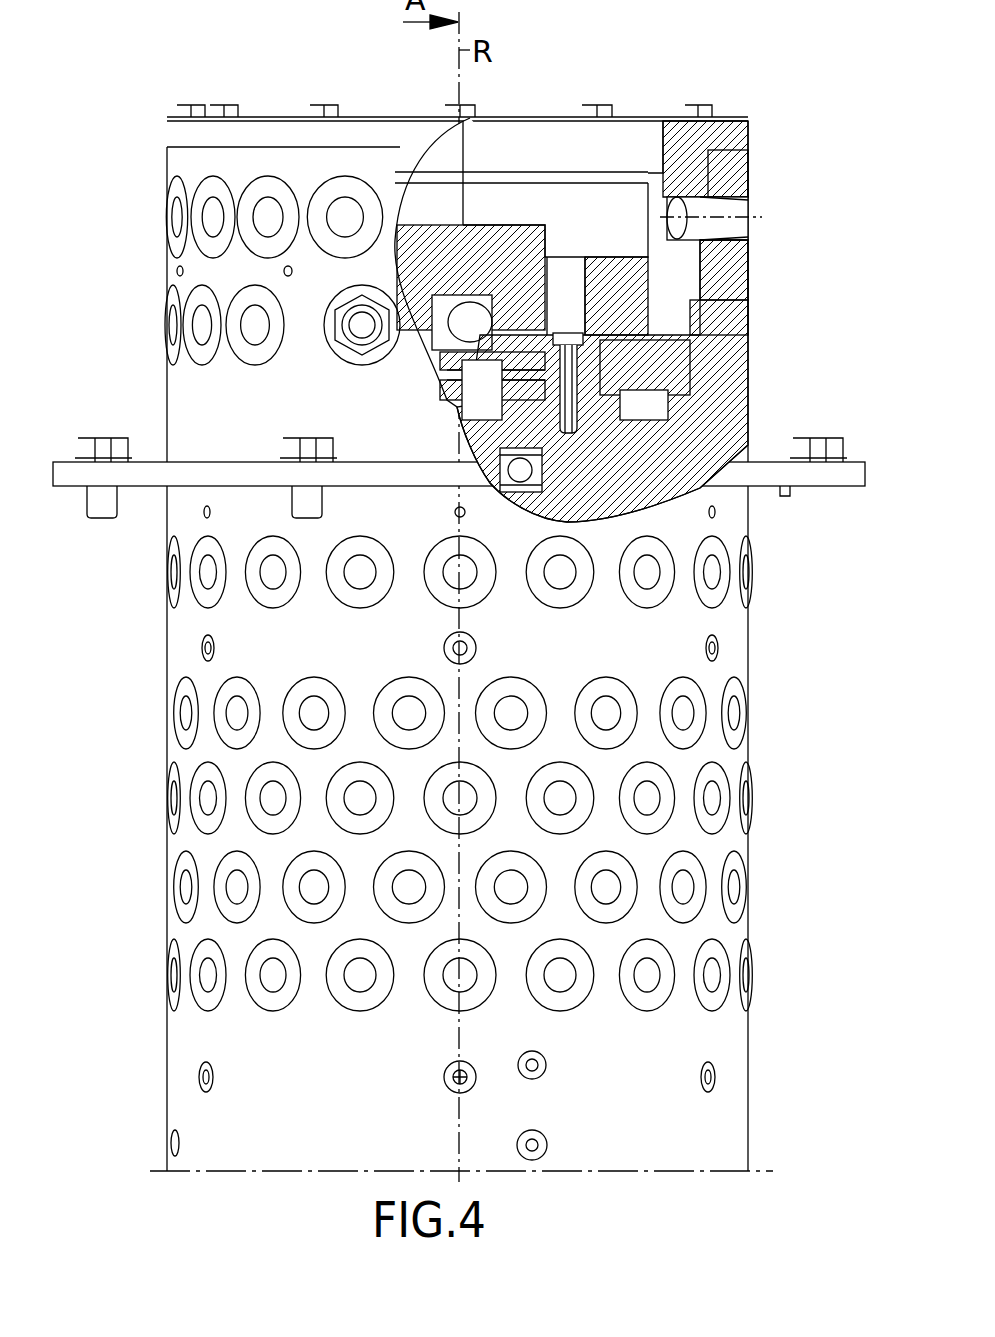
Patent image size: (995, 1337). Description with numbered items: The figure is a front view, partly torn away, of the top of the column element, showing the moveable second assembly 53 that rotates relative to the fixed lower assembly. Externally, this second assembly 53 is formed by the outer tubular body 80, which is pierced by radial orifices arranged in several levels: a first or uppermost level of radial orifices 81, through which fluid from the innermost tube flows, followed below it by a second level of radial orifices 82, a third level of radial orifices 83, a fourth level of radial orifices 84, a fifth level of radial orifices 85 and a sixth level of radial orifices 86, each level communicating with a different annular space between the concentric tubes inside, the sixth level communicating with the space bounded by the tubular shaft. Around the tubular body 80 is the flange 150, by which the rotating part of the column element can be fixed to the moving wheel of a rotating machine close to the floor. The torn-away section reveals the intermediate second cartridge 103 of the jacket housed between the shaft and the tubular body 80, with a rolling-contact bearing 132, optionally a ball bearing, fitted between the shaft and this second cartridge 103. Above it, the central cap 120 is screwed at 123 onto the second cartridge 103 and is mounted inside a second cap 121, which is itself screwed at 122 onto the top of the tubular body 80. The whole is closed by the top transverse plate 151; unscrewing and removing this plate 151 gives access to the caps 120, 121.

The second assembly 53 is at (758, 740).
The tubular body 80 is at (740, 380).
The first level of radial orifices 81 is at (746, 336).
The second level of radial orifices 82 is at (750, 572).
The third level of radial orifices 83 is at (166, 712).
The fourth level of radial orifices 84 is at (166, 797).
The fifth level of radial orifices 85 is at (166, 887).
The sixth level of radial orifices 86 is at (166, 975).
The second cartridge 103 is at (640, 438).
The central cap 120 is at (442, 270).
The second cap 121 is at (655, 262).
The screw connection of second cap 122 is at (698, 102).
The screw connection of central cap 123 is at (577, 338).
The rolling-contact bearing 132 is at (532, 470).
The flange 150 is at (68, 475).
The top transverse plate 151 is at (520, 116).